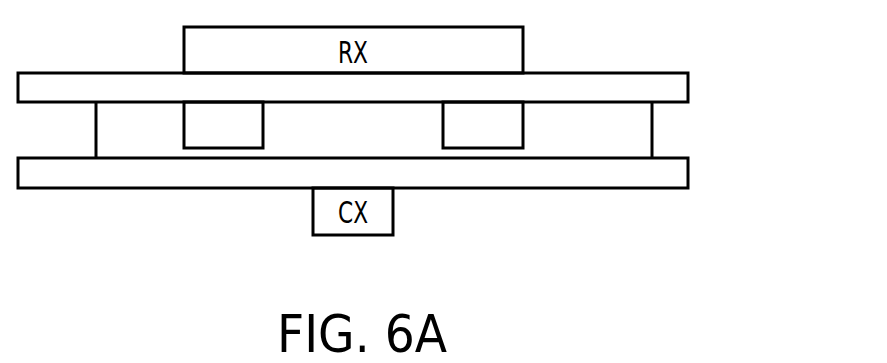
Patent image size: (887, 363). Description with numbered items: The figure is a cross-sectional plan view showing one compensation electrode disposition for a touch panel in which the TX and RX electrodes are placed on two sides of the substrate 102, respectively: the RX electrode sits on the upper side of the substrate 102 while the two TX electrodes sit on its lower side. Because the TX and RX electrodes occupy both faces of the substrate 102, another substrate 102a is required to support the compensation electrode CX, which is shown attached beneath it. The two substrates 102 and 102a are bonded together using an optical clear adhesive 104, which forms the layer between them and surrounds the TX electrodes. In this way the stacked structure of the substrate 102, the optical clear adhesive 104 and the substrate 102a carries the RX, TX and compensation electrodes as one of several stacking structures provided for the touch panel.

The substrate 102 is at (670, 90).
The optical clear adhesive 104 is at (633, 133).
The another substrate 102a is at (670, 174).